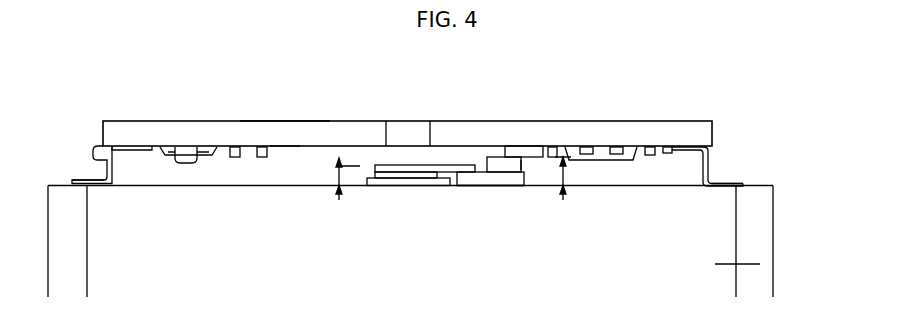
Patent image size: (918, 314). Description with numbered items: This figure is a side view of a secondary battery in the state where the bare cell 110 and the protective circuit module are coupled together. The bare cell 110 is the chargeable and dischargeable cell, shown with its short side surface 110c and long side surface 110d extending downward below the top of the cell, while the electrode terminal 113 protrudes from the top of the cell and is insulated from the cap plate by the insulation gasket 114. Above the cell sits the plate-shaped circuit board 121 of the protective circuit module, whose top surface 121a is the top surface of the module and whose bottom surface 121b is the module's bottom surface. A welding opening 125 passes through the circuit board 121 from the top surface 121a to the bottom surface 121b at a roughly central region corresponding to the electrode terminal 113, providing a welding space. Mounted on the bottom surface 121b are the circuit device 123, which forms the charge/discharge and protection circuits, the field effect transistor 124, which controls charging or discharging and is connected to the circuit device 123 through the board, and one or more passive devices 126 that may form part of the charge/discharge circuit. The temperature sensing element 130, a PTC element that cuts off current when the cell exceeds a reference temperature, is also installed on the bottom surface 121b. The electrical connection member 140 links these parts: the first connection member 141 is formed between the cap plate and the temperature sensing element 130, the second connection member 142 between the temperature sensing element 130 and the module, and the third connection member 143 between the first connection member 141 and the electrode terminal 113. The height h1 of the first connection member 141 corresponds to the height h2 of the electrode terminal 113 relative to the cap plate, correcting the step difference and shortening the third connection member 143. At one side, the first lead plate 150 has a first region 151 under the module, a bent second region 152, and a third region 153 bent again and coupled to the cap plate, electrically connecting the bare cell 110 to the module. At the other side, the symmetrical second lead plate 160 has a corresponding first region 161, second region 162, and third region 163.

The bare cell 110 is at (787, 203).
The short side surface 110c is at (762, 243).
The long side surface 110d is at (717, 265).
The electrode terminal 113 is at (398, 178).
The insulation gasket 114 is at (376, 172).
The circuit board 121 is at (347, 130).
The top surface of the circuit board 121a is at (273, 121).
The bottom surface of the circuit board 121b is at (282, 147).
The circuit device 123 is at (632, 148).
The field effect transistor 124 is at (185, 153).
The welding opening 125 is at (427, 135).
The passive device 126 is at (233, 150).
The temperature sensing element 130 is at (521, 163).
The electrical connection member 140 is at (425, 241).
The first connection member 141 is at (493, 180).
The second connection member 142 is at (512, 150).
The third connection member 143 is at (433, 172).
The first lead plate 150 is at (100, 115).
The first region 151 is at (135, 117).
The second region 152 is at (105, 159).
The third region 153 is at (83, 182).
The second lead plate 160 is at (714, 116).
The first region 161 is at (672, 147).
The second region 162 is at (708, 165).
The third region 163 is at (742, 134).
The height of the first connection member h1 is at (572, 178).
The height of the electrode terminal h2 is at (336, 179).